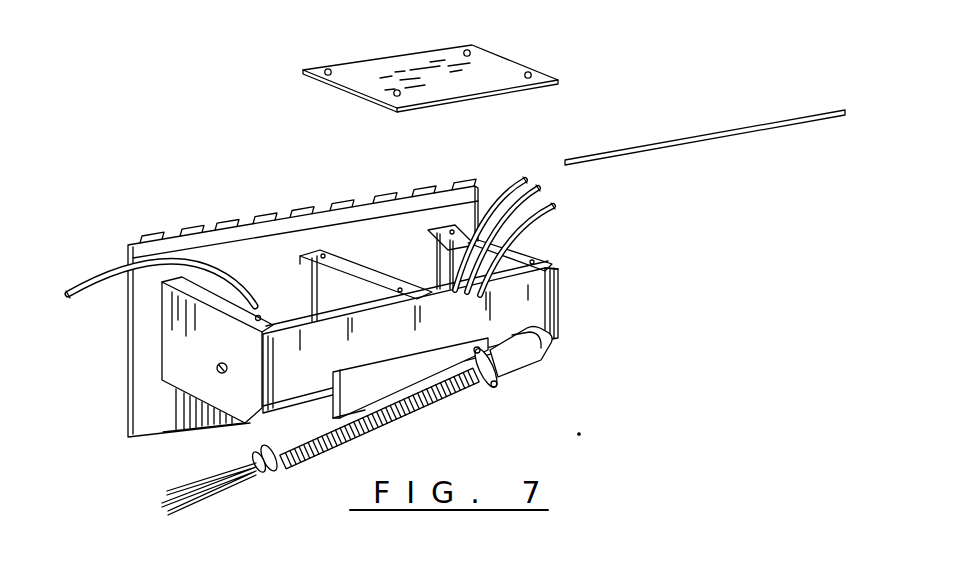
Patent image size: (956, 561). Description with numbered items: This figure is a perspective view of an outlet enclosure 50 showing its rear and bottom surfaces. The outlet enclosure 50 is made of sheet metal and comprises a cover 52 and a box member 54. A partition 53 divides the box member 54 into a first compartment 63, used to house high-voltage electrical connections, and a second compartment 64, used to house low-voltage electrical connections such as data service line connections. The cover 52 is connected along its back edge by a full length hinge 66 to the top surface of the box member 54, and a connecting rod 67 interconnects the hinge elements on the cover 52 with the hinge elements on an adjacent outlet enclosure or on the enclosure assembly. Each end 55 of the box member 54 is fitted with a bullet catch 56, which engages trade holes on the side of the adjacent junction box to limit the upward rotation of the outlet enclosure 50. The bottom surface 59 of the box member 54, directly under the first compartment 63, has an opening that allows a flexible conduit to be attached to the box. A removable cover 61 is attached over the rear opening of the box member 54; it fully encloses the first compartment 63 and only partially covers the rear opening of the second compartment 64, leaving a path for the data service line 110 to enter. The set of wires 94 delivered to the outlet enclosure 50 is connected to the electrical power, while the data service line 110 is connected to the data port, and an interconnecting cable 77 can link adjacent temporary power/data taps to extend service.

The outlet enclosure 50 is at (347, 298).
The cover 52 is at (123, 353).
The partition 53 is at (303, 267).
The box member 54 is at (568, 288).
The end 55 is at (180, 368).
The bullet catch 56 is at (217, 377).
The bottom surface 59 is at (537, 313).
The removable cover 61 is at (519, 63).
The first compartment 63 is at (403, 240).
The second compartment 64 is at (260, 272).
The full length hinge 66 is at (128, 242).
The connecting rod 67 is at (690, 135).
The interconnecting cable 77 is at (415, 415).
The first set of wires 94 is at (533, 163).
The data service line 110 is at (93, 290).